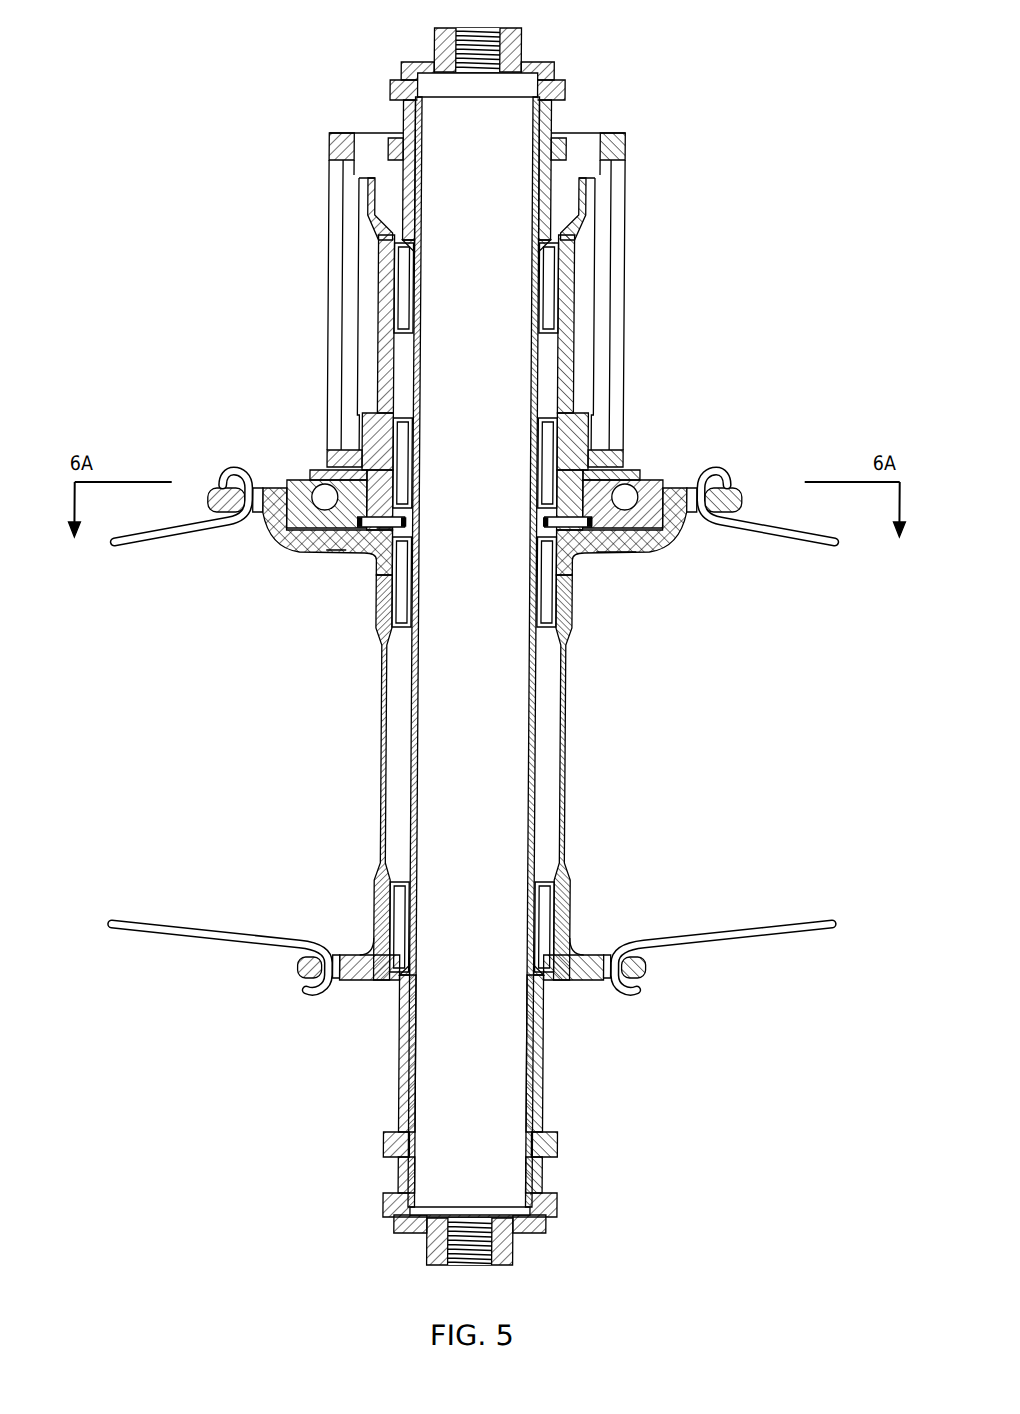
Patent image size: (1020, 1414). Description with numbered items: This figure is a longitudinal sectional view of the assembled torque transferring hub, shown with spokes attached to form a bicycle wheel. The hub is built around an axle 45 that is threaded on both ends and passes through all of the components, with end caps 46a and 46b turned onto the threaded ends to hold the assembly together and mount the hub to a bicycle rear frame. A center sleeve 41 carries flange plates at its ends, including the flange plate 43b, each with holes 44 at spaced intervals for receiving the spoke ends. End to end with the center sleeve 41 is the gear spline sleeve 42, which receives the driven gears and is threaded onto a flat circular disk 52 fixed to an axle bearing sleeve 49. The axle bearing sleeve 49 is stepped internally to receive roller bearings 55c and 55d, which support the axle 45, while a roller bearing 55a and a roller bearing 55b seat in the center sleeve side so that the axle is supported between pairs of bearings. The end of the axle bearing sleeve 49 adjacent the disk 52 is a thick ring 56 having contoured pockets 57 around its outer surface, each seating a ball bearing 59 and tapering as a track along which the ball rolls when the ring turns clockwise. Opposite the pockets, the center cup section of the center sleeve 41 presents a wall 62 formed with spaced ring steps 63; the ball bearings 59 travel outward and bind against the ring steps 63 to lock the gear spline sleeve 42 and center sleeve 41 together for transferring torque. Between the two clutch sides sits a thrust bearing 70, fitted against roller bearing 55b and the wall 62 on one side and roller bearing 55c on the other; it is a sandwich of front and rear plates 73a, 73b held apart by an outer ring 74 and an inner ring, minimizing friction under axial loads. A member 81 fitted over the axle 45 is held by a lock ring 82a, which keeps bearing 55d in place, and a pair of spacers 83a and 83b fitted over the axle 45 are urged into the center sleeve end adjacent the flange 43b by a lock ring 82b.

The center sleeve 41 is at (360, 773).
The gear spline sleeve 42 is at (623, 312).
The flange plate 43b is at (583, 988).
The holes 44 is at (258, 474).
The axle 45 is at (489, 206).
The end cap 46a is at (547, 36).
The end cap 46b is at (570, 1233).
The axle bearing sleeve 49 is at (575, 265).
The flat circular disk 52 is at (632, 494).
The sensor 55a is at (542, 936).
The roller bearing 55b is at (542, 588).
The roller bearing 55c is at (543, 459).
The roller bearing 55d is at (544, 292).
The thick ring 56 is at (601, 484).
The contoured pockets 57 is at (587, 503).
The ball bearings 59 is at (309, 480).
The wall 62 is at (607, 542).
The ring steps 63 is at (301, 541).
The thrust bearing 70 is at (384, 531).
The front plate 73a is at (399, 509).
The rear plate 73b is at (363, 532).
The outer ring 74 is at (344, 549).
The upper spacer sleeve 81 is at (405, 182).
The lock ring 82a is at (398, 148).
The lock ring 82b is at (561, 1148).
The spacer 83a is at (406, 1045).
The spacer 83b is at (404, 1104).